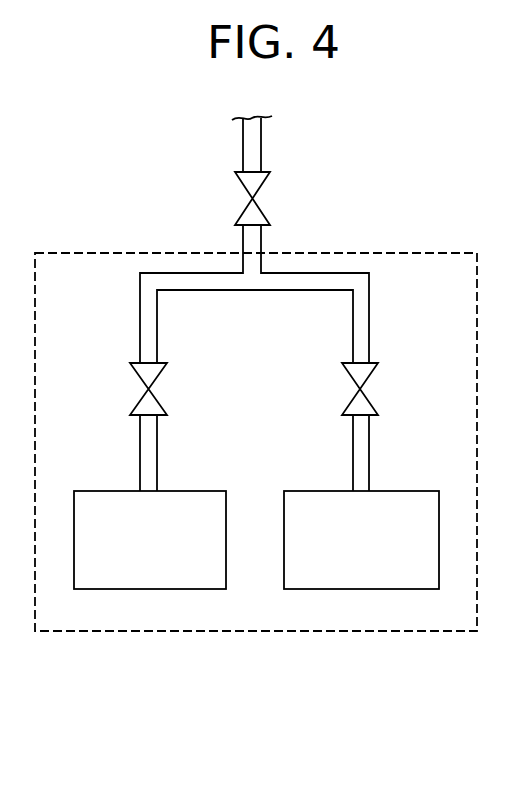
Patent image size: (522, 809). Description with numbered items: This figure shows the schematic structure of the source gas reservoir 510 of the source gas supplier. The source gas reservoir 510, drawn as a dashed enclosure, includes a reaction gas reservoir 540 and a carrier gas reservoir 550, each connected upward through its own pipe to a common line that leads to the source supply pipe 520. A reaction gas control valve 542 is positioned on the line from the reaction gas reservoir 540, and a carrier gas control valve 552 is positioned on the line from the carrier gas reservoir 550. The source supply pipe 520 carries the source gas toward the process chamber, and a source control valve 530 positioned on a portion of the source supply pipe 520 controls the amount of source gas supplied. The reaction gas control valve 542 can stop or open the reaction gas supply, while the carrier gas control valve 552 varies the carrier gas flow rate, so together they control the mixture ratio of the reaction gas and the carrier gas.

The source gas reservoir 510 is at (255, 631).
The source supply pipe 520 is at (261, 141).
The source control valve 530 is at (263, 205).
The reaction gas reservoir 540 is at (152, 589).
The reaction gas control valve 542 is at (137, 397).
The carrier gas reservoir 550 is at (367, 589).
The carrier gas control valve 552 is at (372, 397).